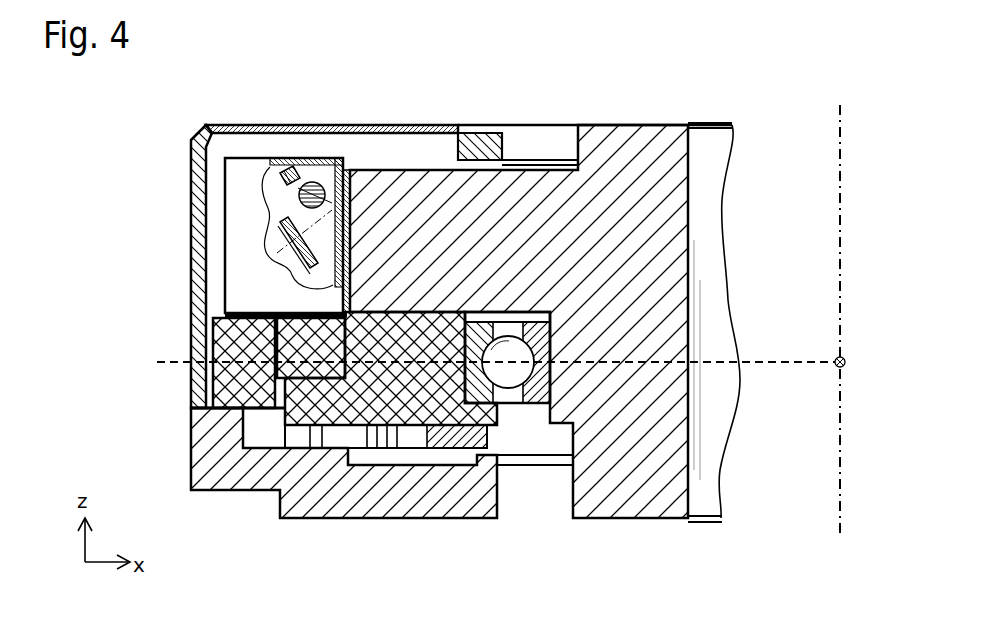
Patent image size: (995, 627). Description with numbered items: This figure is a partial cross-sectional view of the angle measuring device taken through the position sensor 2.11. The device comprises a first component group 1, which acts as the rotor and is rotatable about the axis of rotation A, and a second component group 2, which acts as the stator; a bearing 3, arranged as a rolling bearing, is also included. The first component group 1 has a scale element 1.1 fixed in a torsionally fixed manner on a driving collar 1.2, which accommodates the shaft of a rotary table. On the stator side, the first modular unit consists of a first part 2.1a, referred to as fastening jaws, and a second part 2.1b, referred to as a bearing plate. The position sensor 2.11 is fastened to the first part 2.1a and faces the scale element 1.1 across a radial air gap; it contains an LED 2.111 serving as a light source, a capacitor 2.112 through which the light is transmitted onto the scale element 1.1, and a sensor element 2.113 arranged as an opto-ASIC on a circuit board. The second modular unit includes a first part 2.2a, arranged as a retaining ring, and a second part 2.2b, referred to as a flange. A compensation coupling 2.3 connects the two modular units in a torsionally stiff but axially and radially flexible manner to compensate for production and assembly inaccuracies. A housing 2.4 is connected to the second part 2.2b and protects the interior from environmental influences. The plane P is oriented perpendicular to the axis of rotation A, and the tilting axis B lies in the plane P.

The first component group 1 is at (721, 285).
The scale element 1.1 is at (349, 170).
The driving collar 1.2 is at (657, 222).
The second component group 2 is at (186, 287).
The first part of first modular unit 2.1a is at (276, 320).
The second part of first modular unit 2.1b is at (285, 425).
The position sensor 2.11 is at (225, 219).
The LED 2.111 is at (282, 180).
The capacitor 2.112 is at (302, 183).
The sensor element 2.113 is at (283, 249).
The first part of second modular unit 2.2a is at (213, 360).
The second part of second modular unit 2.2b is at (205, 453).
The compensation coupling 2.3 is at (441, 448).
The housing 2.4 is at (190, 144).
The bearing 3 is at (517, 398).
The axis of rotation A is at (838, 181).
The plane P is at (776, 362).
The tilting axis B is at (838, 366).